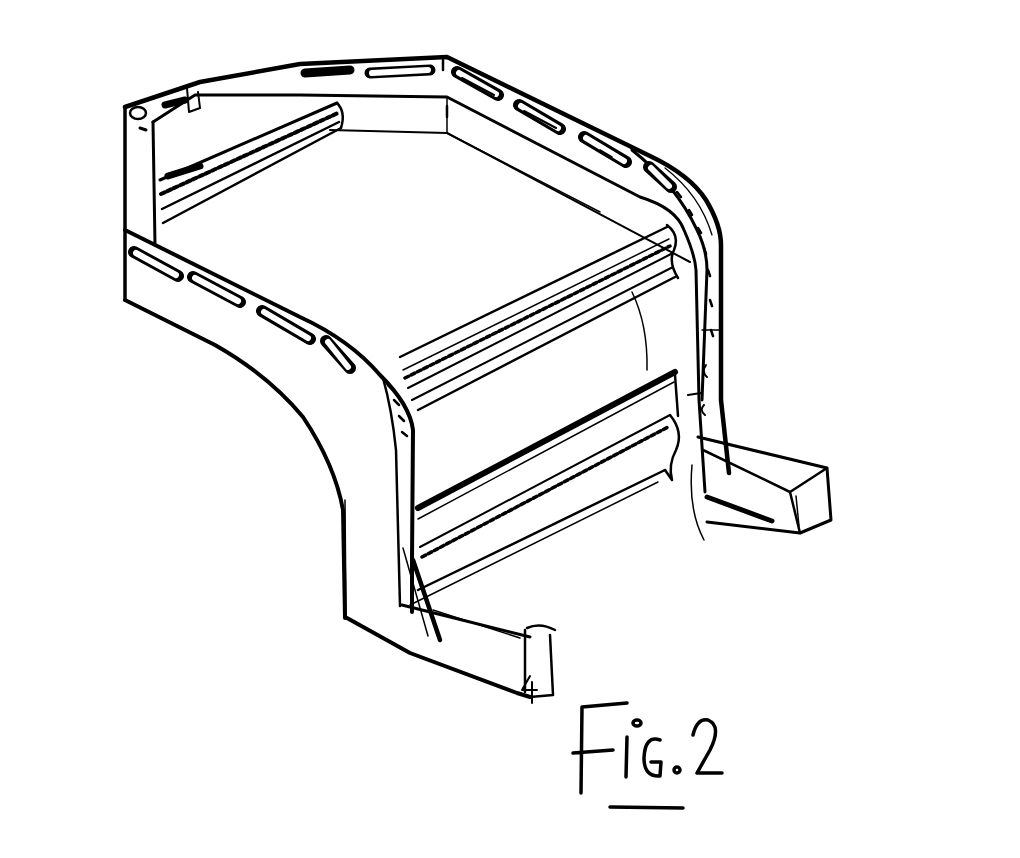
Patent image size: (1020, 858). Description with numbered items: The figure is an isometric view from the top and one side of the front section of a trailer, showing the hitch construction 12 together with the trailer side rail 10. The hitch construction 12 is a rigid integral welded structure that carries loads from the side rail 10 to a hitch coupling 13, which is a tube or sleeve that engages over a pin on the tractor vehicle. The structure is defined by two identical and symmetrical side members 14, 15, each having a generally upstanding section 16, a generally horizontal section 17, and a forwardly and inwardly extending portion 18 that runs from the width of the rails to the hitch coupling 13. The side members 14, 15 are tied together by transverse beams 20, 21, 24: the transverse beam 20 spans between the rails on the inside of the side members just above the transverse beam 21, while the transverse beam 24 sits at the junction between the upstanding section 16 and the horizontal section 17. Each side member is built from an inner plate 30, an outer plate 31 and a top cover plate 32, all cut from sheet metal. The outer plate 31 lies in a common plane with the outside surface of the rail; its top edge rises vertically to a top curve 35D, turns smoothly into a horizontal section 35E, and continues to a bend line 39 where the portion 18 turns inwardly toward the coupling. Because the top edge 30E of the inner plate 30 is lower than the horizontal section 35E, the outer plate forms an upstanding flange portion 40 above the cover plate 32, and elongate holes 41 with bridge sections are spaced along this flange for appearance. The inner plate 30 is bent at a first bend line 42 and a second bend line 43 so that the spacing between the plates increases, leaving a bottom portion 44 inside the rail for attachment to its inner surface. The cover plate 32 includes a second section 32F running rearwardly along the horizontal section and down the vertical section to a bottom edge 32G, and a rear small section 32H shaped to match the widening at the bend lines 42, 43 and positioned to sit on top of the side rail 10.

The side rail 10 is at (463, 663).
The hitch construction 12 is at (632, 84).
The hitch coupling 13 is at (123, 113).
The side member 14 is at (275, 153).
The side member 15 is at (511, 147).
The generally upstanding section 16 is at (357, 520).
The generally horizontal section 17 is at (198, 325).
The forwardly and inwardly extending portion 18 is at (133, 165).
The transverse beam 20 is at (522, 467).
The transverse beam 21 is at (547, 543).
The transverse beam 24 is at (497, 318).
The inner plate 30 is at (387, 120).
The top edge of inner plate 30E is at (530, 137).
The outer plate 31 is at (403, 57).
The top cover plate 32 is at (300, 83).
The second section of cover plate 32F is at (714, 231).
The bottom edge of cover plate second section 32G is at (720, 353).
The rear small section of cover plate 32H is at (725, 393).
The top curve 35D is at (690, 187).
The horizontal section of top edge 35E is at (610, 130).
The bend line 39 is at (447, 112).
The flange portion 40 is at (640, 157).
The holes 41 is at (170, 290).
The first bend line 42 is at (712, 365).
The second bend line 43 is at (725, 408).
The bottom portion of inner plate 44 is at (750, 522).